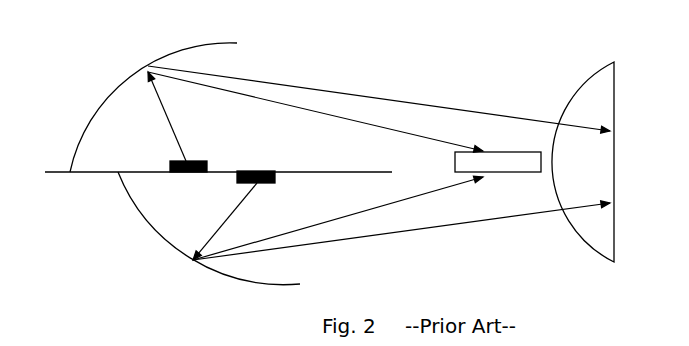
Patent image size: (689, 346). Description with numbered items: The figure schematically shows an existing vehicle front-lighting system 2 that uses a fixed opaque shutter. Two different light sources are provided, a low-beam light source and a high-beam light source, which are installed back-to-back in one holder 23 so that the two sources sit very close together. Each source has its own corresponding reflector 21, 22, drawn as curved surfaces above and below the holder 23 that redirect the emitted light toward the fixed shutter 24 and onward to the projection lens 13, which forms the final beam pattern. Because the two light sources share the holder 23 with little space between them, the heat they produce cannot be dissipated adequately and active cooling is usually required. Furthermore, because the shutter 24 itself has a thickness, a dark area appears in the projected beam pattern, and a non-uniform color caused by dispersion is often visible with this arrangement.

The front-lighting system 2 is at (319, 153).
The reflector 21 is at (130, 107).
The reflector 22 is at (199, 228).
The holder 23 is at (218, 157).
The fixed shutter 24 is at (519, 167).
The projection lens 13 is at (580, 169).